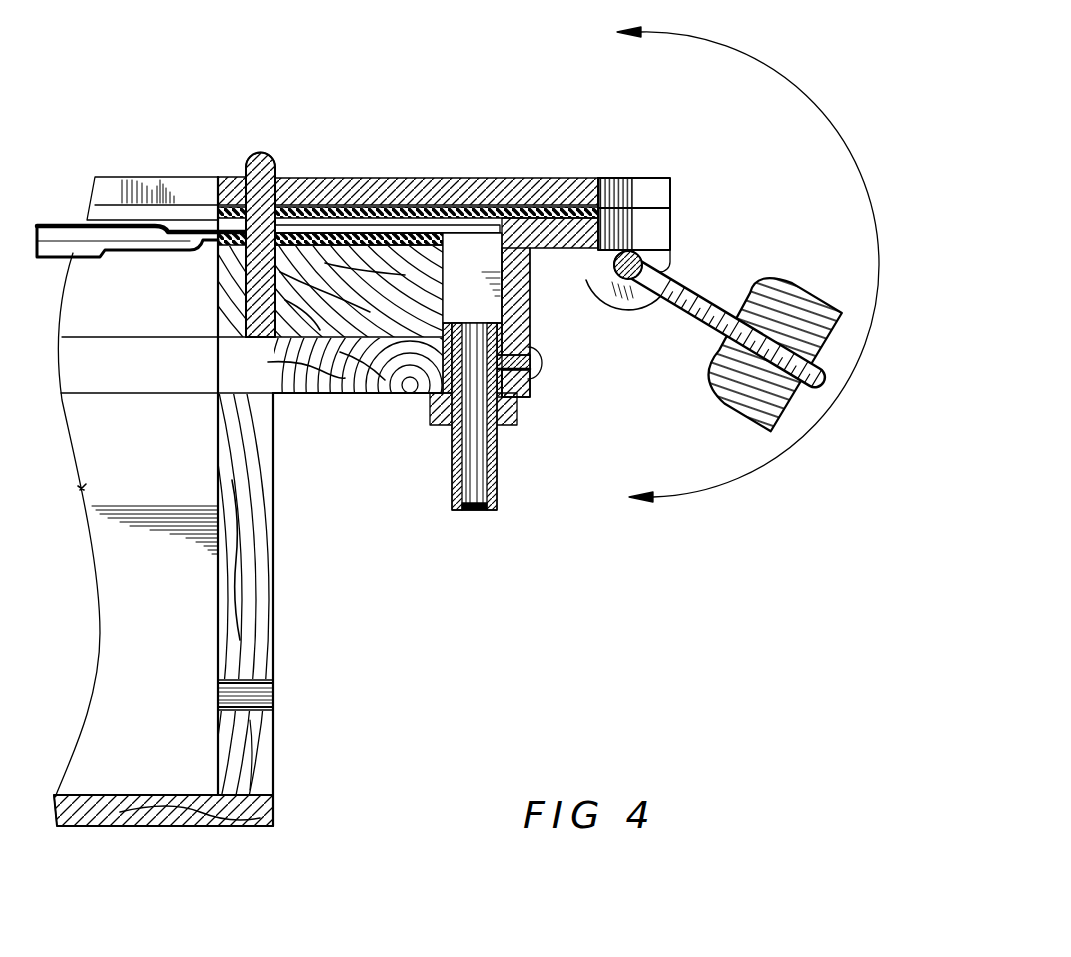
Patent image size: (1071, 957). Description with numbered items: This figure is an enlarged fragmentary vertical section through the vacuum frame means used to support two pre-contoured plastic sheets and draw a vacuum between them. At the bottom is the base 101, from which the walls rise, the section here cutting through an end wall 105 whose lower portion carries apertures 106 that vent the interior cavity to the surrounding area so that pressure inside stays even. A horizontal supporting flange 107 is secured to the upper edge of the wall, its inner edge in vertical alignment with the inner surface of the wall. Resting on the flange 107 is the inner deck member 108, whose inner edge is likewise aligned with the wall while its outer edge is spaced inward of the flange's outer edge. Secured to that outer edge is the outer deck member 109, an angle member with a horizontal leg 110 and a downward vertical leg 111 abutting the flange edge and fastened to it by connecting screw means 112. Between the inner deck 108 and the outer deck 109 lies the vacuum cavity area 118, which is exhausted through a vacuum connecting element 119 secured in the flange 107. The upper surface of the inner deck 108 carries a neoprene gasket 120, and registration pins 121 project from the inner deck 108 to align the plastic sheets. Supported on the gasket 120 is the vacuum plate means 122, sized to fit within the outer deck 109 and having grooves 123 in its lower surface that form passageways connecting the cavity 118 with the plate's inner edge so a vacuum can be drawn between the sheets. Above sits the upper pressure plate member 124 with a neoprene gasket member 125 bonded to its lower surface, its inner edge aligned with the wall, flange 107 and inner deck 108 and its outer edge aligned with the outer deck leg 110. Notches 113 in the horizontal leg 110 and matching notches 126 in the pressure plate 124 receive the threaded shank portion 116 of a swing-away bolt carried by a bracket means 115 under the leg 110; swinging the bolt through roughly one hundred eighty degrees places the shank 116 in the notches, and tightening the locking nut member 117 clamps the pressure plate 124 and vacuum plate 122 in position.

The base 101 is at (186, 800).
The end wall 105 is at (267, 597).
The apertures 106 is at (262, 700).
The horizontal supporting flange 107 is at (305, 388).
The inner deck member 108 is at (243, 322).
The outer deck member 109 is at (538, 331).
The horizontal leg 110 is at (553, 249).
The vertical leg 111 is at (522, 383).
The connecting screw means 112 is at (542, 355).
The notches 113 is at (662, 235).
The bracket means 115 is at (622, 302).
The shank portion 116 is at (702, 293).
The locking nut member 117 is at (730, 368).
The vacuum cavity area 118 is at (487, 264).
The vacuum connecting element 119 is at (452, 470).
The neoprene gasket 120 is at (227, 252).
The registration pins 121 is at (252, 164).
The vacuum plate means 122 is at (448, 203).
The grooves 123 is at (476, 234).
The upper pressure plate member 124 is at (367, 188).
The neoprene gasket member 125 is at (292, 210).
The notches 126 is at (635, 188).